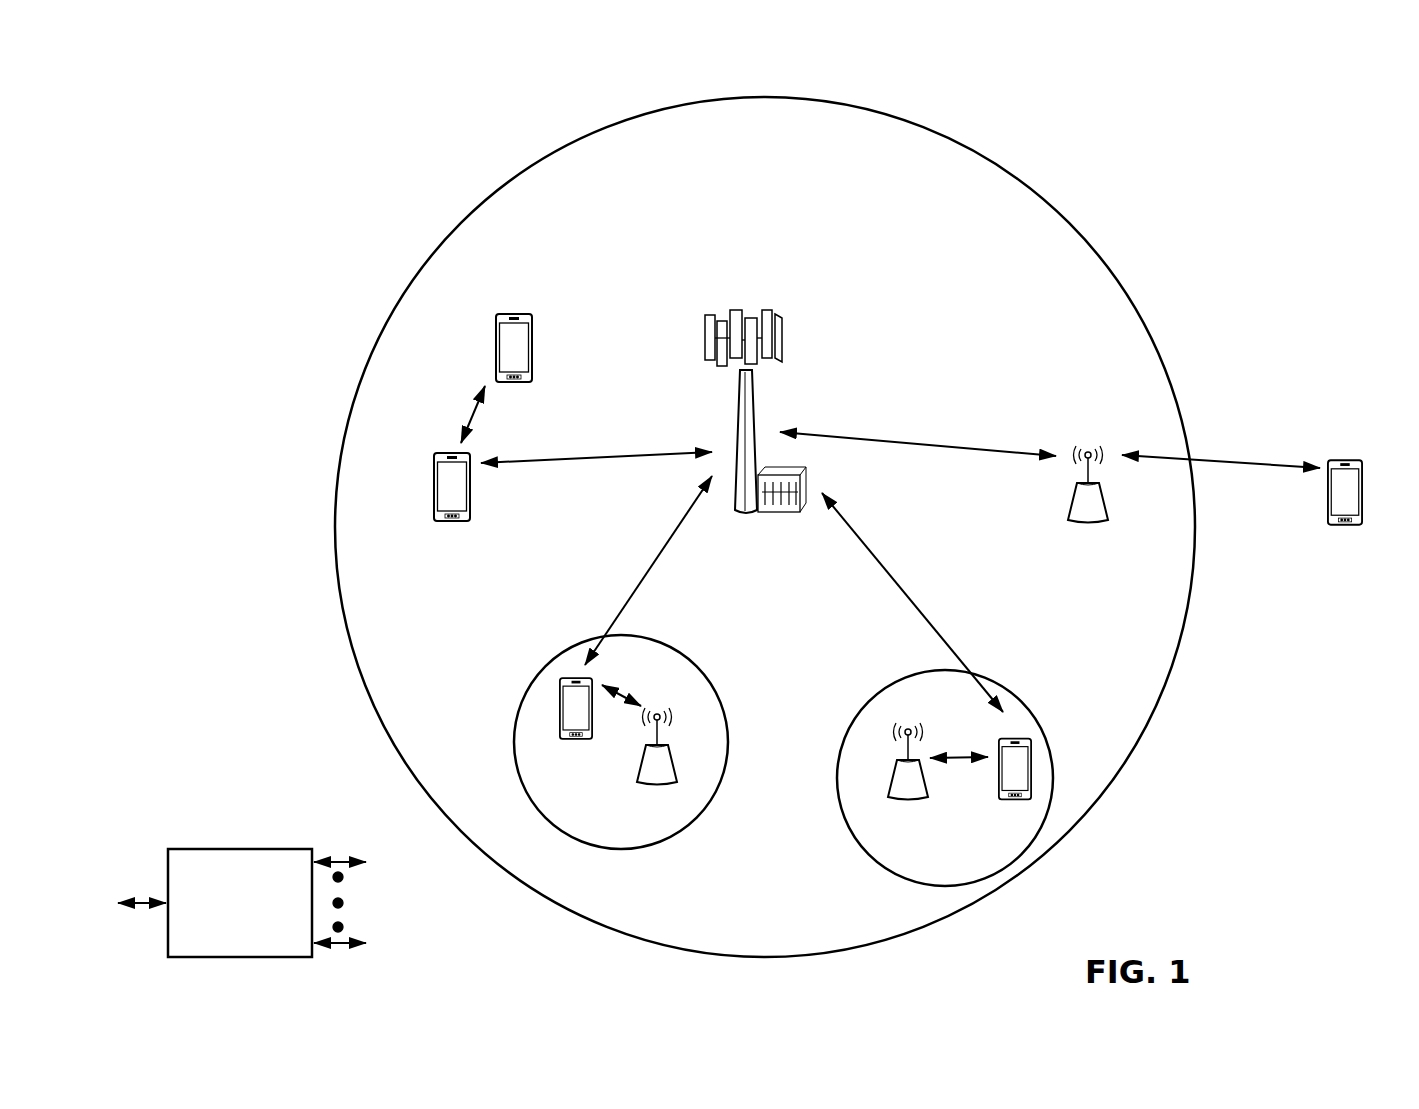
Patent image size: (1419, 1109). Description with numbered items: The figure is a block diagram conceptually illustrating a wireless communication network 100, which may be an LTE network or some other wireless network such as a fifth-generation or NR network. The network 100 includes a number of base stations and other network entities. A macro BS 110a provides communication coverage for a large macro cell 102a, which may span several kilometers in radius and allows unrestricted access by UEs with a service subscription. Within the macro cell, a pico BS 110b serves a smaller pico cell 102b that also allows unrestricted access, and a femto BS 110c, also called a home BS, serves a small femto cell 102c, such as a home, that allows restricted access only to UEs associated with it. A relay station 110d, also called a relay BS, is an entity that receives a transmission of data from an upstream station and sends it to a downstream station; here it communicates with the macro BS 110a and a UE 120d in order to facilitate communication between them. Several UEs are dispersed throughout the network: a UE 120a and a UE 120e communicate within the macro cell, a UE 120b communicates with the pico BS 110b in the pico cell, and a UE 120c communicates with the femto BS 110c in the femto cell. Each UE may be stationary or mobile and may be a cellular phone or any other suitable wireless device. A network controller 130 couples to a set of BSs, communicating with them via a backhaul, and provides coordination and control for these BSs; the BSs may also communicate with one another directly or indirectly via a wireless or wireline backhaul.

The wireless network 100 is at (218, 90).
The macro cell 102a is at (1056, 207).
The pico cell 102b is at (712, 680).
The femto cell 102c is at (880, 688).
The macro BS 110a is at (757, 306).
The pico BS 110b is at (680, 775).
The femto BS 110c is at (893, 790).
The relay station 110d is at (1090, 444).
The UE 120a is at (434, 485).
The UE 120b is at (575, 744).
The UE 120c is at (1010, 803).
The UE 120d is at (1362, 458).
The UE 120e is at (497, 330).
The network controller 130 is at (240, 848).